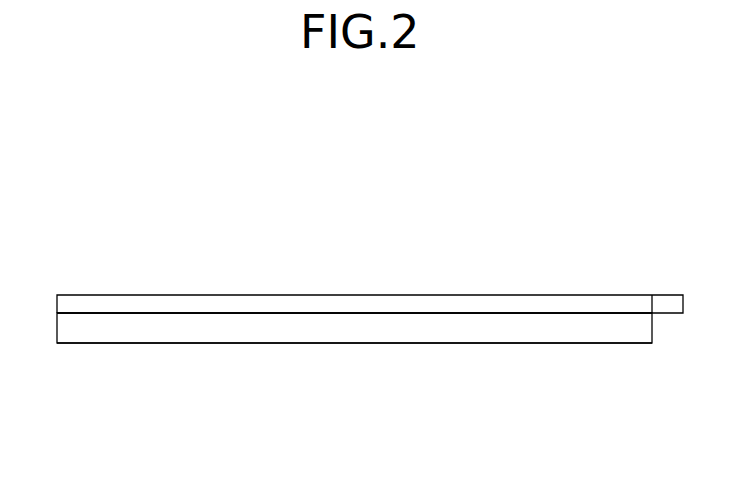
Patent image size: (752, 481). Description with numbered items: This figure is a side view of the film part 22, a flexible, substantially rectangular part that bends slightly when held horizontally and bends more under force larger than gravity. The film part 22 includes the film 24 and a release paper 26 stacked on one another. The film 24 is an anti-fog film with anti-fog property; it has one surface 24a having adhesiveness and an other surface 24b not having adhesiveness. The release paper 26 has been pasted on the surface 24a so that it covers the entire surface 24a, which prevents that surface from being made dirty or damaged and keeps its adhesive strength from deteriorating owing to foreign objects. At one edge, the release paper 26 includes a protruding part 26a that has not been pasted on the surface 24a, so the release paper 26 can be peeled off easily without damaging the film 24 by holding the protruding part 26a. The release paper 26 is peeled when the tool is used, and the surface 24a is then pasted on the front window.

The film part 22 is at (373, 301).
The film 24 is at (347, 324).
The surface 24a is at (183, 313).
The other surface 24b is at (185, 344).
The release paper 26 is at (398, 299).
The protruding part 26a is at (667, 300).